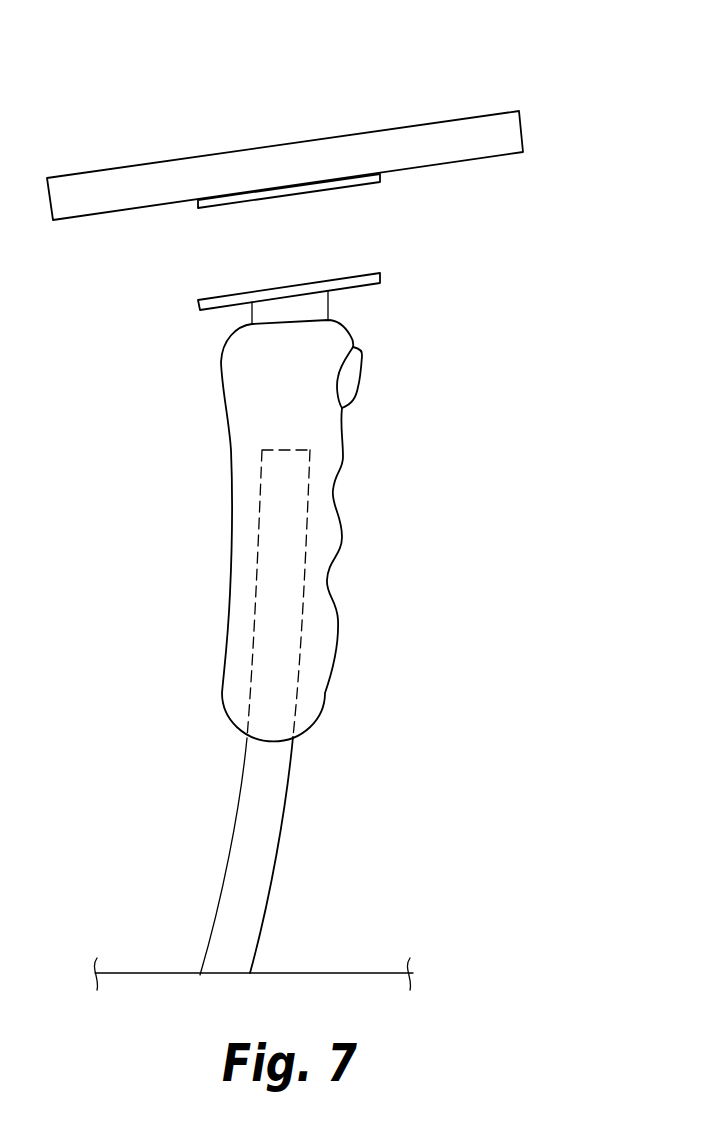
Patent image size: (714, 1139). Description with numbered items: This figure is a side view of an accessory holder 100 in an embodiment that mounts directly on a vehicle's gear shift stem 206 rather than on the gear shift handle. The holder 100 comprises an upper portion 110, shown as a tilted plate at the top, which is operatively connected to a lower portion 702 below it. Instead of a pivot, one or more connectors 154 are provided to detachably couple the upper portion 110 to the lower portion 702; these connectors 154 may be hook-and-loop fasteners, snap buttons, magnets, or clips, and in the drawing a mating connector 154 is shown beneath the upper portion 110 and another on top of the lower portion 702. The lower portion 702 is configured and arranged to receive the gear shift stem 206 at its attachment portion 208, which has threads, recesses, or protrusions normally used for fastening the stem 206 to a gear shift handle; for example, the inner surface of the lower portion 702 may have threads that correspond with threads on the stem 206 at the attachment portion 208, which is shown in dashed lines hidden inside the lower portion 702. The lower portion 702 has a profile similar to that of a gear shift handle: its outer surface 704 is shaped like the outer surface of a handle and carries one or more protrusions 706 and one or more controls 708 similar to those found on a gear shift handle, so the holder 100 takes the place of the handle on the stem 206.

The accessory holder 100 is at (130, 47).
The upper portion 110 is at (378, 130).
The connectors 154 is at (325, 190).
The lower portion 702 is at (150, 448).
The outer surface 704 is at (343, 552).
The protrusions 706 is at (352, 333).
The controls 708 is at (361, 383).
The attachment portion 208 is at (260, 457).
The gear shift stem 206 is at (273, 883).